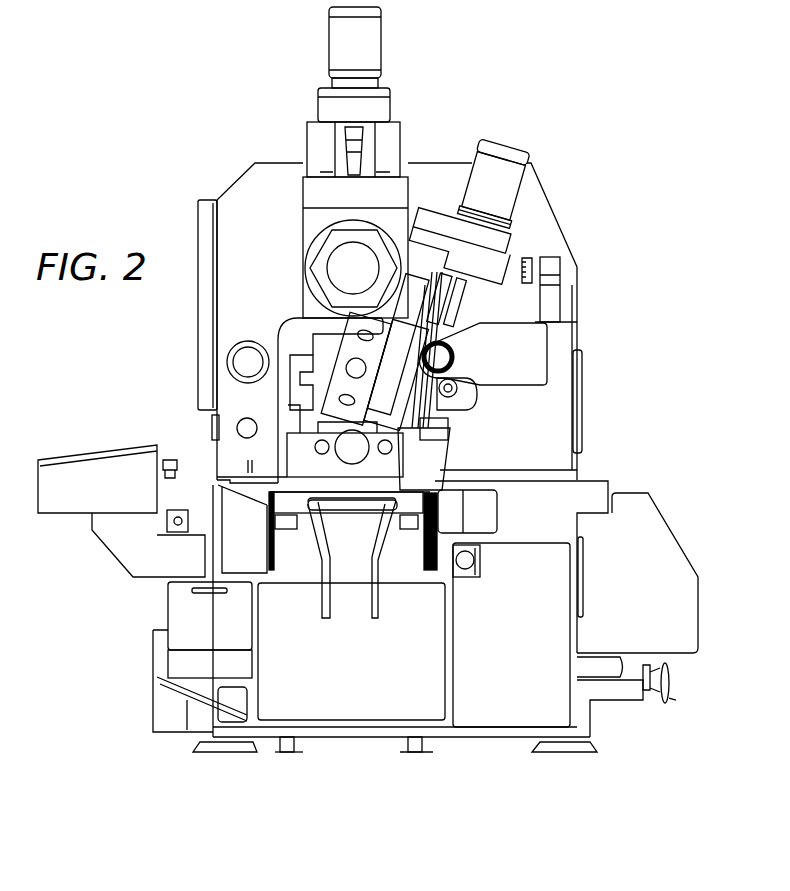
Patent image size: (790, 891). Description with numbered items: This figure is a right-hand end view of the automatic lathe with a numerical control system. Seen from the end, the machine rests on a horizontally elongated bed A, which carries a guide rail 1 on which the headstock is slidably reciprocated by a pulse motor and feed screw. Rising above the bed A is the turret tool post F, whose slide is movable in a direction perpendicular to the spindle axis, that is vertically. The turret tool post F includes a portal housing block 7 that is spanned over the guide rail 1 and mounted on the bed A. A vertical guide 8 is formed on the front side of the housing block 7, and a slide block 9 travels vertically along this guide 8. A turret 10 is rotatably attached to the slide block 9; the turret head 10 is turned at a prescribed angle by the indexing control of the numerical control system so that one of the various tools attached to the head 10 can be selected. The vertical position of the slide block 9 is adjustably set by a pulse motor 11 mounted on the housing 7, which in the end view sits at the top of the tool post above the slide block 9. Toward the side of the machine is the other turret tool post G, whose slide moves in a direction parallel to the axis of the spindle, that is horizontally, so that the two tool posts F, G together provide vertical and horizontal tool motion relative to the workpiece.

The guide rail 1 is at (290, 446).
The portal housing block 7 is at (216, 307).
The vertical guide 8 is at (390, 130).
The slide block 9 is at (407, 182).
The turret 10 is at (376, 242).
The pulse motor 11 is at (360, 50).
The bed A is at (441, 650).
The turret tool post F is at (221, 172).
The turret tool post G is at (592, 360).